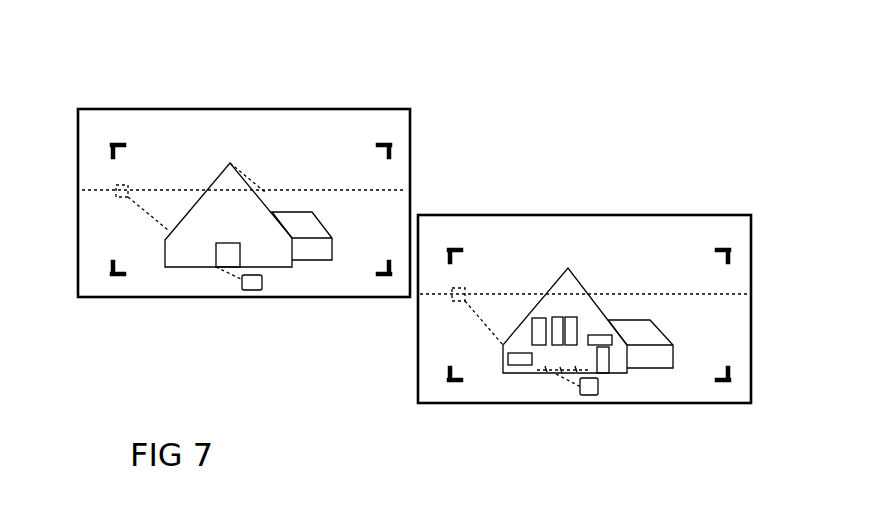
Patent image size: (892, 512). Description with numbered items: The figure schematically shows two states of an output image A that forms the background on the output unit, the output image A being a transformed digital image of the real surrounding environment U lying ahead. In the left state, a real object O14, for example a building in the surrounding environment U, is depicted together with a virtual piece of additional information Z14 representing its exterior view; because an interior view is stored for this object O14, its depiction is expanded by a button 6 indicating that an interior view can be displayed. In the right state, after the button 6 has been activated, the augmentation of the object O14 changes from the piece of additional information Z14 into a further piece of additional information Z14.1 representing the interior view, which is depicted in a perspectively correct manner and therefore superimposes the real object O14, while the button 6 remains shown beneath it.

The output image A is at (128, 109).
The real surrounding environment U is at (195, 135).
The real object O14 is at (232, 184).
The virtual piece of additional information Z14 is at (264, 200).
The further piece of additional information Z14.1 is at (557, 340).
The button 6 is at (254, 291).